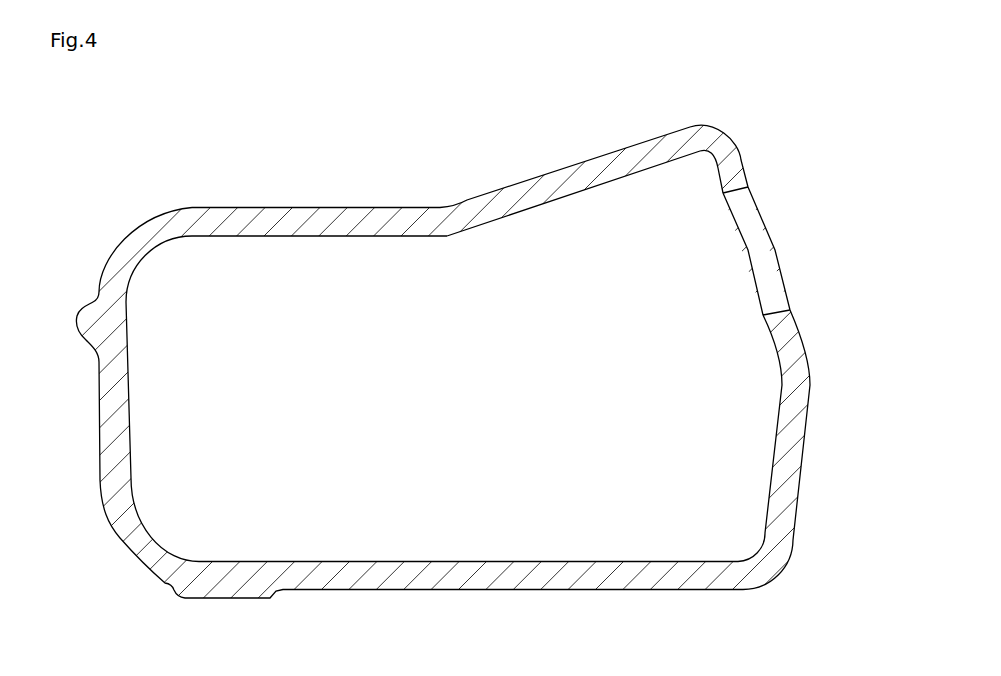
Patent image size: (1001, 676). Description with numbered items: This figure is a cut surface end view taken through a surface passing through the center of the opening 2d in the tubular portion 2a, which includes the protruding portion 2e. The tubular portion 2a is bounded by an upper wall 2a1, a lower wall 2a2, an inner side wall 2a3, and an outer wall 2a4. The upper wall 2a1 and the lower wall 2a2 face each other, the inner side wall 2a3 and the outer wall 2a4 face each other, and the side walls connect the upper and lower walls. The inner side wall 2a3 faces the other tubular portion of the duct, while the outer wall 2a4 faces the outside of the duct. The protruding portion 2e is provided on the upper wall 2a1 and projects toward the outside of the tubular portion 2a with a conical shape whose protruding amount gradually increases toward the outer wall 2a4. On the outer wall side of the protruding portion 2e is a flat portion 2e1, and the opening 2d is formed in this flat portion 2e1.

The tubular portion 2a is at (349, 90).
The upper wall 2a1 is at (303, 207).
The lower wall 2a2 is at (455, 582).
The inner side wall 2a3 is at (108, 437).
The outer wall 2a4 is at (798, 432).
The protruding portion 2e is at (635, 128).
The flat portion 2e1 is at (742, 165).
The opening 2d is at (762, 250).